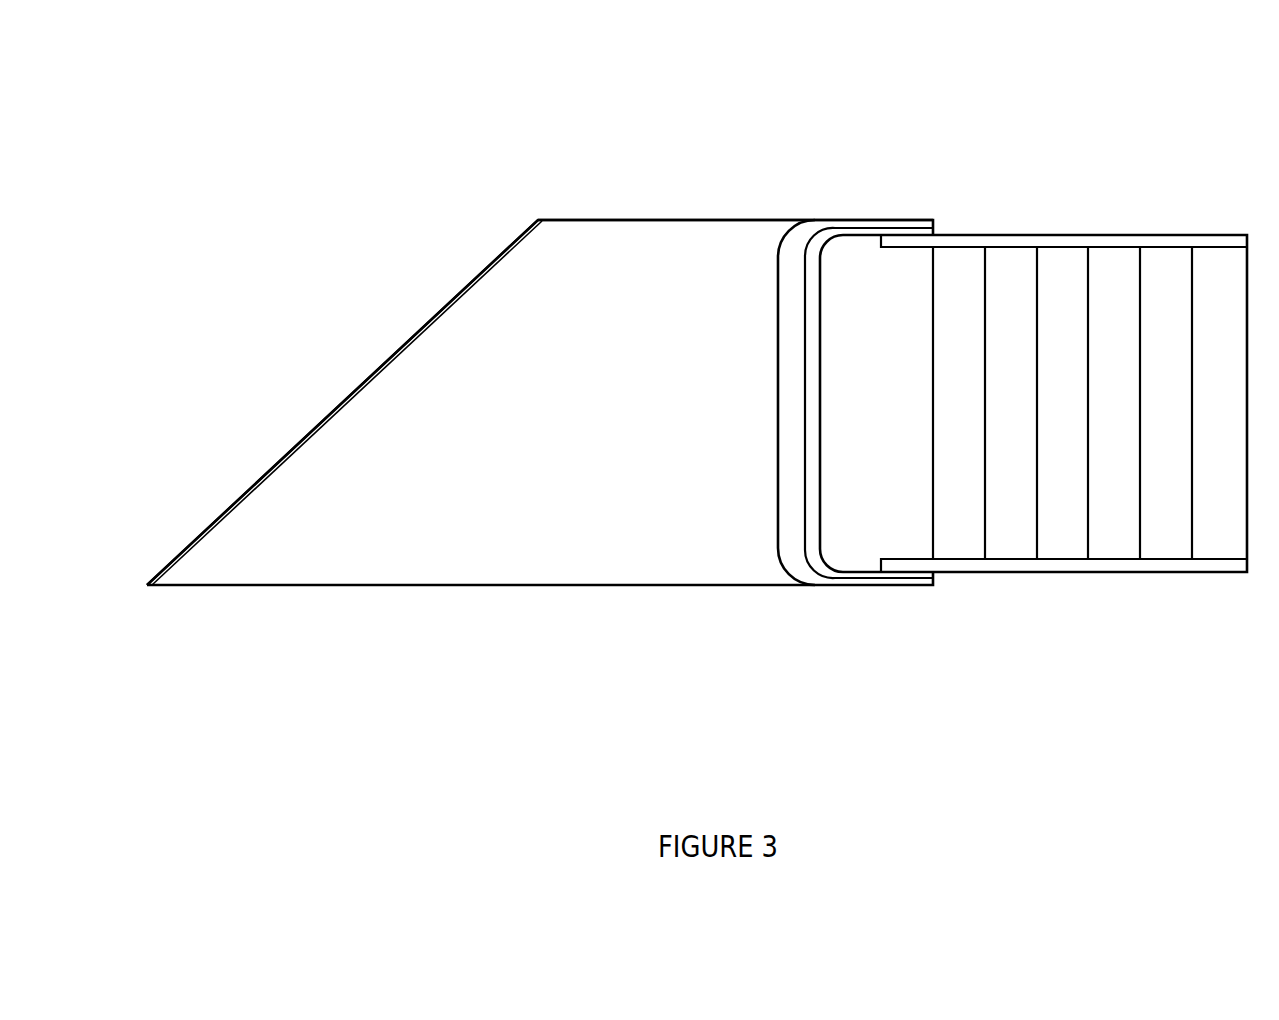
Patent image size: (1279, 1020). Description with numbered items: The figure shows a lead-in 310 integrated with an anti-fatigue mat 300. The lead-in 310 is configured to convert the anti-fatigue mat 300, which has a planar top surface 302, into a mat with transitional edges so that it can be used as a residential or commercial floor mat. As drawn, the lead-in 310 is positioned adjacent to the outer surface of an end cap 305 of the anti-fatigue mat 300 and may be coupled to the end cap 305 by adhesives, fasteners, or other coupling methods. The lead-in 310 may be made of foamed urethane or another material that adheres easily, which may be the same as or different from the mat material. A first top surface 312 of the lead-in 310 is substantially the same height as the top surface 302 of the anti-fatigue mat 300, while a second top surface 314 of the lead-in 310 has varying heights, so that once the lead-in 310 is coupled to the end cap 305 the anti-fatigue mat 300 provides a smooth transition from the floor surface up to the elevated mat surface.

The anti-fatigue mat 300 is at (1190, 137).
The top surface 302 is at (1136, 235).
The end cap 305 is at (802, 336).
The lead-in 310 is at (400, 403).
The first top surface 312 is at (618, 220).
The second top surface 314 is at (258, 467).